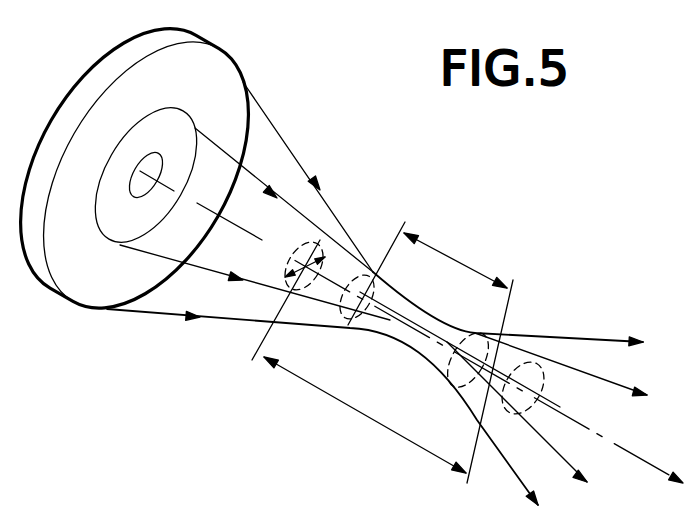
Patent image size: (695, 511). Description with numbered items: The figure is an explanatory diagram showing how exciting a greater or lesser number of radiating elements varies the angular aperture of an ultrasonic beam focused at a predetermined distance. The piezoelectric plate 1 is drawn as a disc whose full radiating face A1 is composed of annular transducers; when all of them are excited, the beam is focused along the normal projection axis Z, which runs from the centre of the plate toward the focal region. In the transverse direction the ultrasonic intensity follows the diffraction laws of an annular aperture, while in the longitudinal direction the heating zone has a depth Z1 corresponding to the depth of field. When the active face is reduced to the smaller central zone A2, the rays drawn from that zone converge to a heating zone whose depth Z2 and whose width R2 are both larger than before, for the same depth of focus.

The lens 1 is at (105, 50).
The radiating face A1 is at (232, 53).
The zone of reduced active face A2 is at (167, 107).
The width of the heating zone R2 is at (300, 266).
The depth of the heating zone Z1 is at (427, 273).
The depth of the heating zone with reduced active face Z2 is at (382, 361).
The normal projection axis Z is at (440, 343).